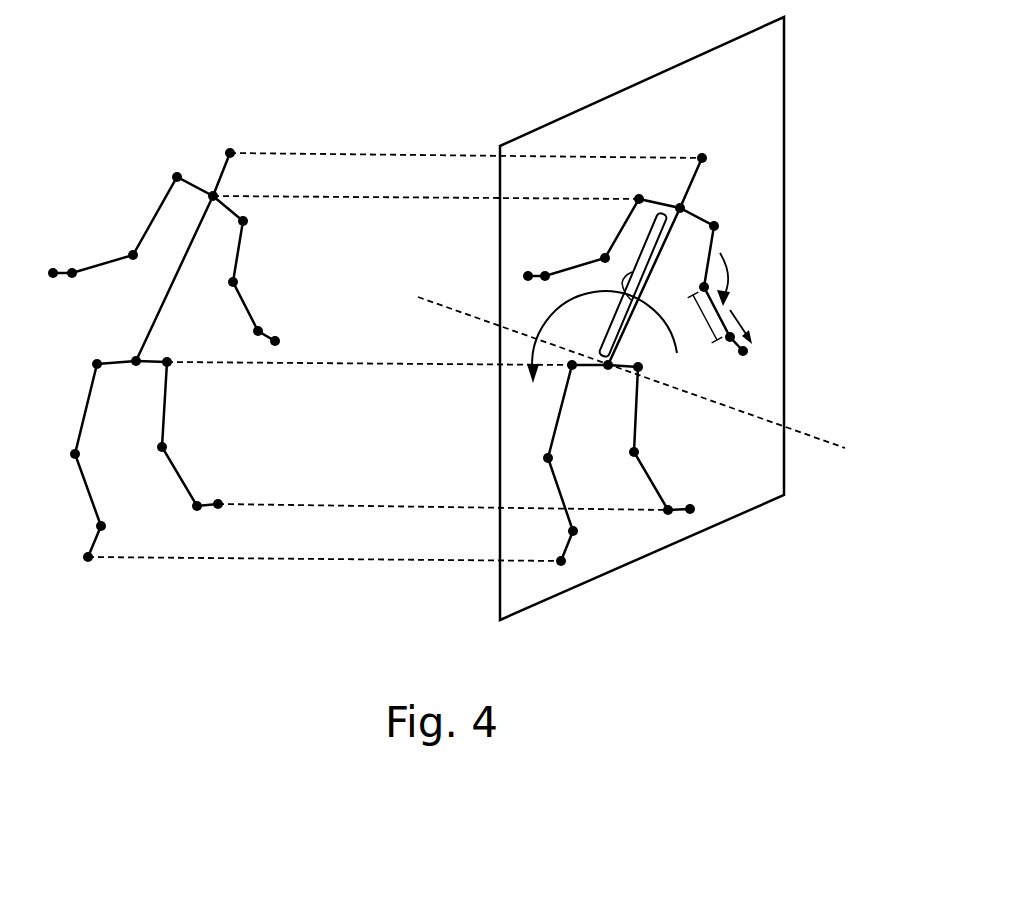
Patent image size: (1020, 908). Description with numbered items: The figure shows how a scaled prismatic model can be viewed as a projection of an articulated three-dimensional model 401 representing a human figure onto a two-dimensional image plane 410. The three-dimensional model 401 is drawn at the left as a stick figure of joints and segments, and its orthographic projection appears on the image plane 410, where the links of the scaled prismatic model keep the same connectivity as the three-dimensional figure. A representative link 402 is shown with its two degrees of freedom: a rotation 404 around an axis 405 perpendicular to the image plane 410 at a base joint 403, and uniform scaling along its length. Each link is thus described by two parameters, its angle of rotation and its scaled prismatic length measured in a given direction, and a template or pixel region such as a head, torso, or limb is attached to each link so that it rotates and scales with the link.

The 3-D model 401 is at (162, 203).
The link 402 is at (644, 369).
The base joint 403 is at (609, 373).
The rotation 404 is at (571, 300).
The axis 405 is at (815, 438).
The image plane 410 is at (673, 65).